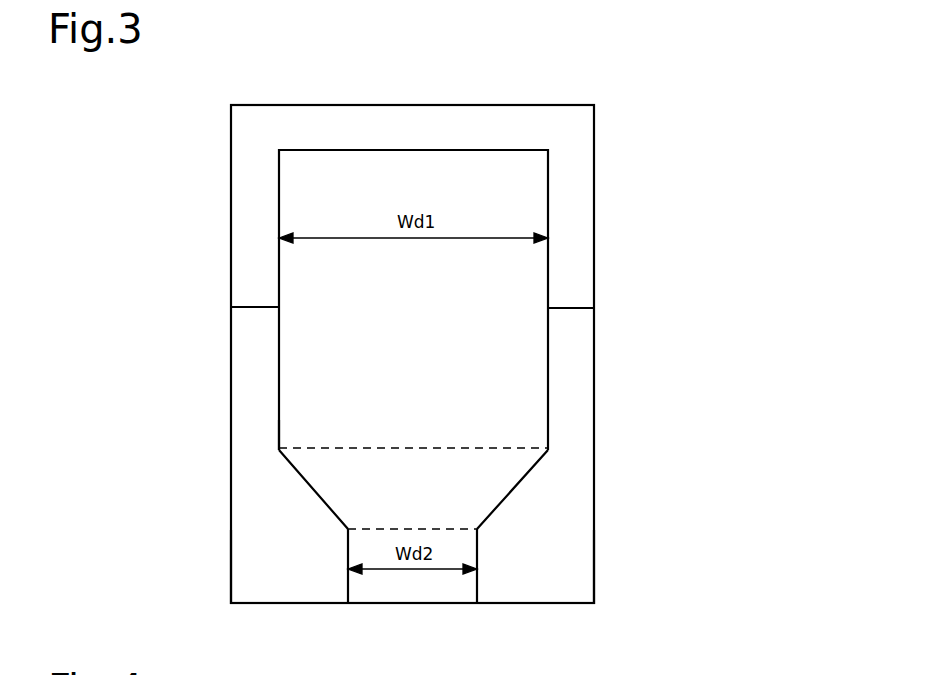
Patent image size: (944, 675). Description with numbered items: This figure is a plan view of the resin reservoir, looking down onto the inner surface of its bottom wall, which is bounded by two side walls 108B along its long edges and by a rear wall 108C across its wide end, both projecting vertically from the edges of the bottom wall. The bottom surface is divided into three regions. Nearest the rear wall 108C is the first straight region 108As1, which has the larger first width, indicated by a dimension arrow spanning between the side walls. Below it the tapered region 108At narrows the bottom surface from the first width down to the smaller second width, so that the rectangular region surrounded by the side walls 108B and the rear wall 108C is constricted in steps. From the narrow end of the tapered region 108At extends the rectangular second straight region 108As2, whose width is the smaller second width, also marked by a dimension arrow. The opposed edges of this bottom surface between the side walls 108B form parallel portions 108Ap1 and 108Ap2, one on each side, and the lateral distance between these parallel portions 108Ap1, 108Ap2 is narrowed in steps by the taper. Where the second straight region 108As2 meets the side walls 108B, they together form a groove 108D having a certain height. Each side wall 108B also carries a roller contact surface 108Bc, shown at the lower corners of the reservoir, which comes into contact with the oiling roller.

The side wall 108B is at (573, 202).
The rear wall 108C is at (386, 127).
The first straight region 108As1 is at (407, 306).
The parallel portion 108Ap1 is at (279, 419).
The parallel portion 108Ap2 is at (548, 378).
The tapered region 108At is at (440, 482).
The groove 108D is at (366, 592).
The second straight region 108As2 is at (418, 590).
The roller contact surface 108Bc is at (255, 533).